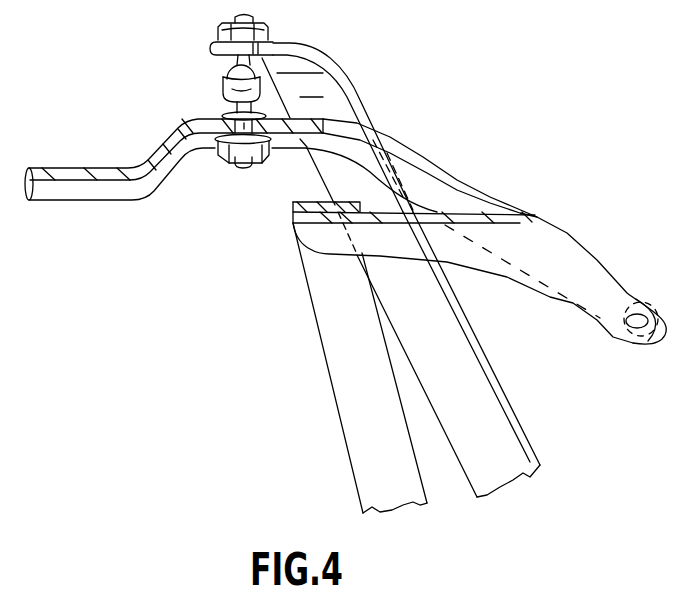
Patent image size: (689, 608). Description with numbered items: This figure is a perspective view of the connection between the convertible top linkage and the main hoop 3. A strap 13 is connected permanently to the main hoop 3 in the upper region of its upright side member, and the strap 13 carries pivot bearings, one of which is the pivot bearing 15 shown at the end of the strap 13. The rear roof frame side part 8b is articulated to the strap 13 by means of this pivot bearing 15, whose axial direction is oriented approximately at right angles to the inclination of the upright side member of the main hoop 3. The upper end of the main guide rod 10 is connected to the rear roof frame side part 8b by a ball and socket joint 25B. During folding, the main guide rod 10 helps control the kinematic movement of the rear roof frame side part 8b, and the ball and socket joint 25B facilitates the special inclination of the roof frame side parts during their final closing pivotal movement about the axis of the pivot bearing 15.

The main hoop 3 is at (360, 465).
The rear roof frame side part 8b is at (127, 201).
The main guide rod 10 is at (477, 403).
The strap 13 is at (582, 252).
The pivot bearing 15 is at (645, 352).
The ball and socket joint 25B is at (208, 81).